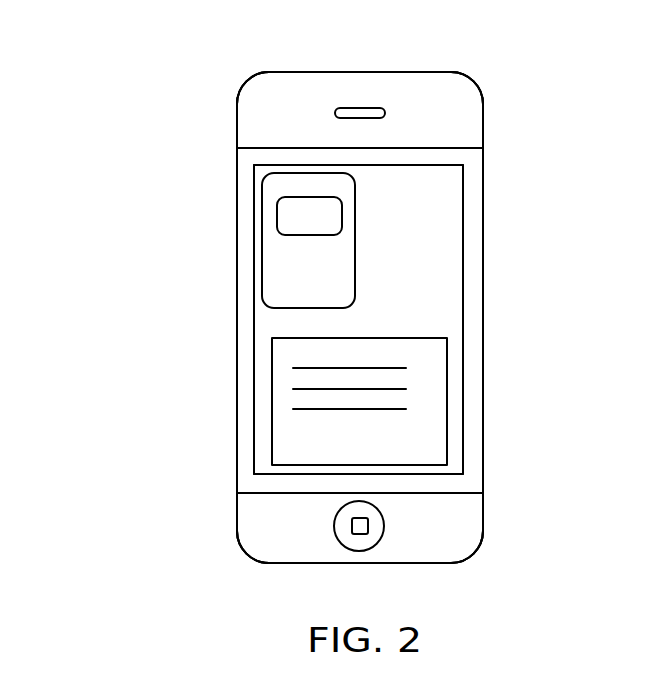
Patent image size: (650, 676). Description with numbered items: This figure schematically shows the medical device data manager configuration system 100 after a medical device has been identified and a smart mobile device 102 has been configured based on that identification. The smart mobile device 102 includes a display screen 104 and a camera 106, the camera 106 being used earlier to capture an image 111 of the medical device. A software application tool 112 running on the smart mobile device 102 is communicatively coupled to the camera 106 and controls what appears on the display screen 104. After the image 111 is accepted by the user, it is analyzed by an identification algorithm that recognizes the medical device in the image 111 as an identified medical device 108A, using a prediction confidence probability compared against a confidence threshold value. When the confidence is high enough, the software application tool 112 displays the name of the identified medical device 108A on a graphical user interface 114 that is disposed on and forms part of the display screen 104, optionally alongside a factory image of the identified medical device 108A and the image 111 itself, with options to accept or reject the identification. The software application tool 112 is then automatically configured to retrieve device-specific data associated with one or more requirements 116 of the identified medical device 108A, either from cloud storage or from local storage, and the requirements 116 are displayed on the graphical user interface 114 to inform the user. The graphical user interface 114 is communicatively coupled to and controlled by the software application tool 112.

The medical device data manager configuration system 100 is at (105, 152).
The smart mobile device 102 is at (483, 168).
The display screen 104 is at (247, 418).
The camera 106 is at (358, 107).
The identified medical device 108A is at (285, 268).
The image 111 is at (275, 212).
The software application tool 112 is at (463, 228).
The graphical user interface 114 is at (393, 240).
The requirements 116 is at (410, 420).